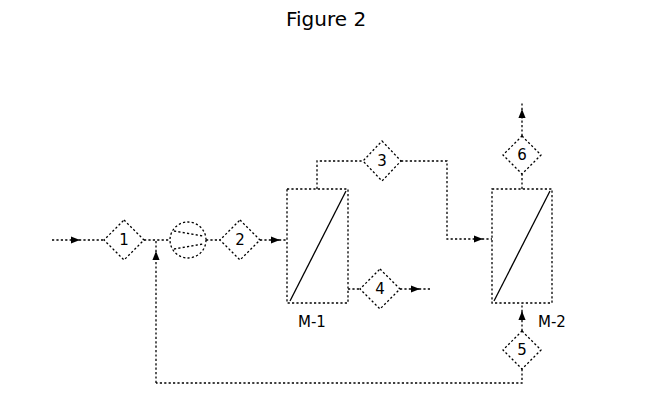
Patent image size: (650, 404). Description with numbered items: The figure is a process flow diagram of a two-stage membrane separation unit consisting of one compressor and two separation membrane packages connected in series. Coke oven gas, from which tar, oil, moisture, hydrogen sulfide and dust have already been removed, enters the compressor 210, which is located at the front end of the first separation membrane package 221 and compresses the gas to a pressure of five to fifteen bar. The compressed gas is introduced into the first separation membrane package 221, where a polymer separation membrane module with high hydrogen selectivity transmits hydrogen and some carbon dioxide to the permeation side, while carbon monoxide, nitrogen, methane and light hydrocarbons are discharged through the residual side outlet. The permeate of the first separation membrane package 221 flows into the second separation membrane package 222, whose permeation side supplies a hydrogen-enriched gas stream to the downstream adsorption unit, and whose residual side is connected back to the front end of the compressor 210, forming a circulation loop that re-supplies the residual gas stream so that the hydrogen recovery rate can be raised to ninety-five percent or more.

The compressor 210 is at (186, 222).
The first separation membrane package 221 is at (295, 189).
The second separation membrane package 222 is at (545, 189).